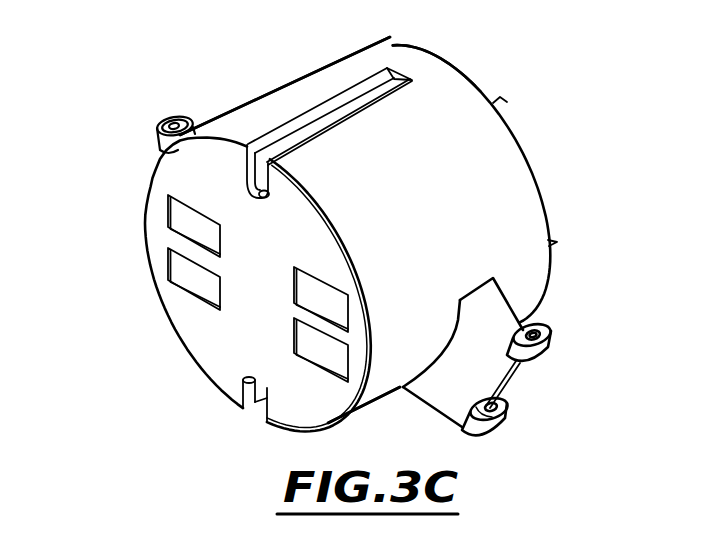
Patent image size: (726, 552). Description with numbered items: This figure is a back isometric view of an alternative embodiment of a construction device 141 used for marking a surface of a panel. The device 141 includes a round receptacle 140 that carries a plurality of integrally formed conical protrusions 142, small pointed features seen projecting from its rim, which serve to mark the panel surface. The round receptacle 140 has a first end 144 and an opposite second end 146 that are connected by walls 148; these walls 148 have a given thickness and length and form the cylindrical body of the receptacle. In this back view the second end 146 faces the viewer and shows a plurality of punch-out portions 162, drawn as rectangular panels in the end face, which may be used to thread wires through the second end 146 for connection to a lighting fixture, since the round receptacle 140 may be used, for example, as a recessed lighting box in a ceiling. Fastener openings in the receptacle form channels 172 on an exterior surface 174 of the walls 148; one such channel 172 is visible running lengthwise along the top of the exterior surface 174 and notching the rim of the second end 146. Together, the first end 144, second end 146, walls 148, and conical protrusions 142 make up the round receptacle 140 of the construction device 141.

The round receptacle 140 is at (354, 46).
The construction device 141 is at (478, 42).
The conical protrusion 142 is at (502, 100).
The first end 144 is at (533, 167).
The second end 146 is at (192, 175).
The walls 148 is at (268, 102).
The punch-out portions 162 is at (193, 223).
The channels 172 is at (332, 110).
The exterior surface 174 is at (401, 157).